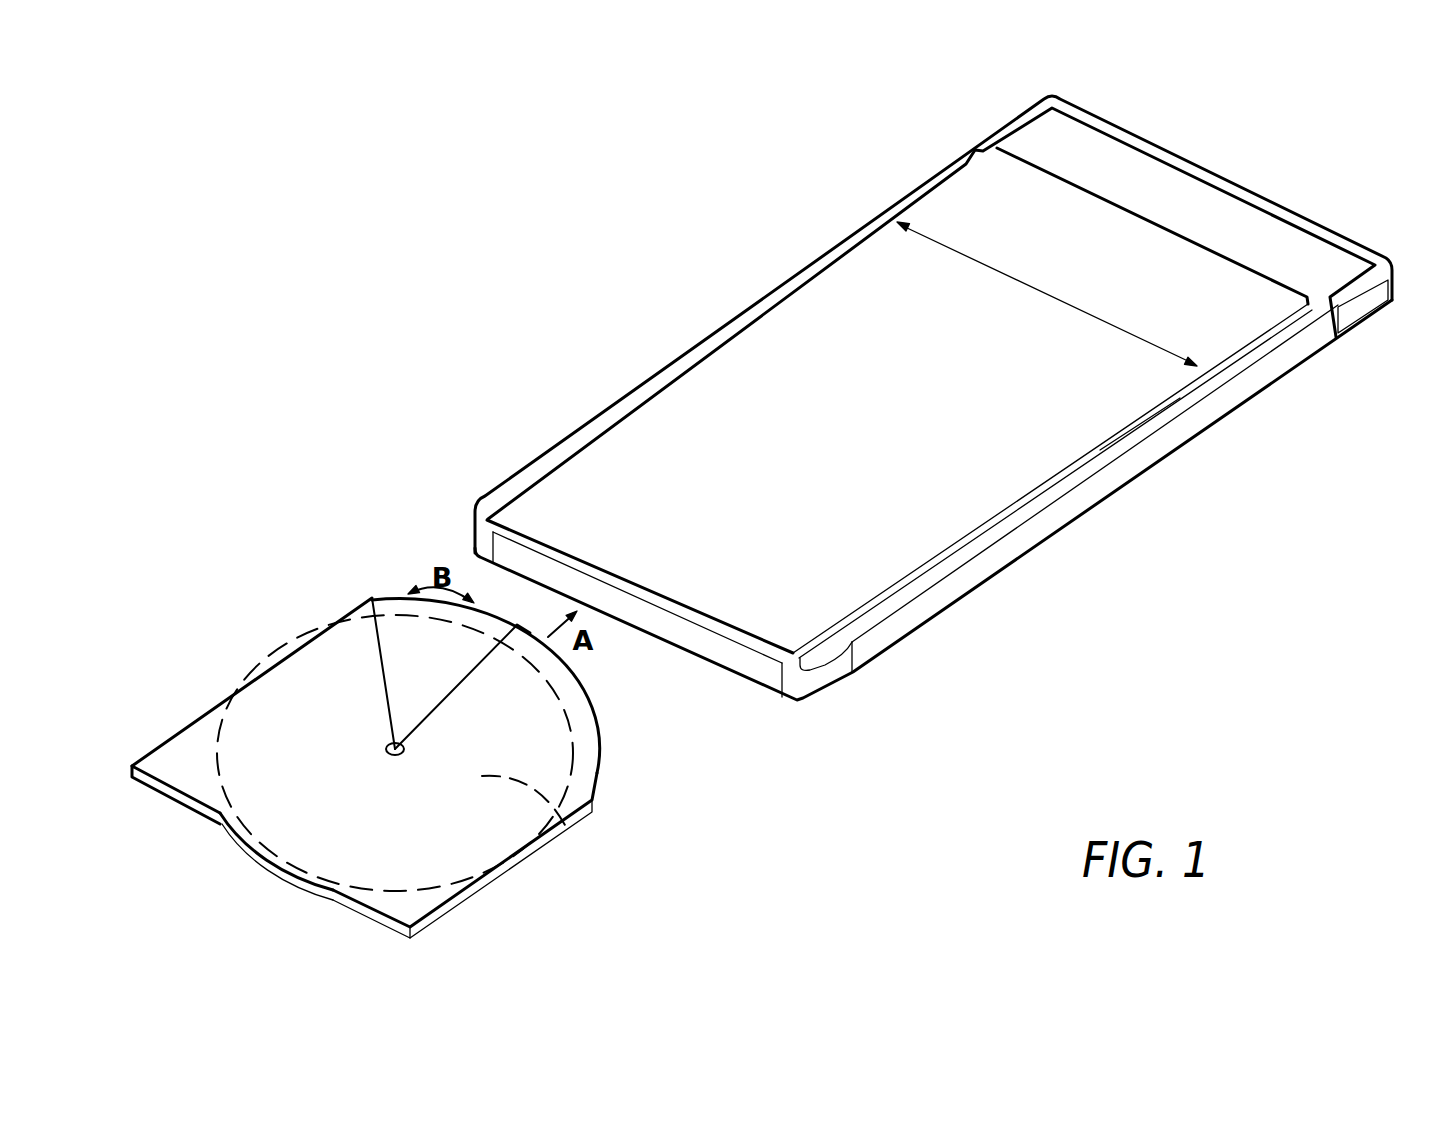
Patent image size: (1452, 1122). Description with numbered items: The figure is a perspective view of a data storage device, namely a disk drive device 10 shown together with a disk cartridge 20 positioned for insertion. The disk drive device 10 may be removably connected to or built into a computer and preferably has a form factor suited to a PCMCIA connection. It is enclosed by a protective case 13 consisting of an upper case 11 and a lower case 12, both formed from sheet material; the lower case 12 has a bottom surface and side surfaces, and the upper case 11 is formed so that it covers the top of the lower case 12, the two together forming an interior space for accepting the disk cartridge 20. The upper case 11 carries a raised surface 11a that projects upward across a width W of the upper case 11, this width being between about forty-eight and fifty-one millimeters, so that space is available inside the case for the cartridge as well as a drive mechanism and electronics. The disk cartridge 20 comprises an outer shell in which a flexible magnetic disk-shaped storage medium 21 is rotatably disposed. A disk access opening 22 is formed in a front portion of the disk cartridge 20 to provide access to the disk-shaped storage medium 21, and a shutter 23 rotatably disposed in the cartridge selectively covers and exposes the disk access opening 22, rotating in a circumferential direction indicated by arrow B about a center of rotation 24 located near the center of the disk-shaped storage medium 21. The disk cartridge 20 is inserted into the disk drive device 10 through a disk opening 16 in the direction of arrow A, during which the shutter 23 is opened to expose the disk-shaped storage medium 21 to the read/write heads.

The disk drive device 10 is at (808, 429).
The upper case 11 is at (1202, 315).
The raised surface 11a is at (1068, 420).
The lower case 12 is at (1297, 350).
The protective case 13 is at (1390, 357).
The disk opening 16 is at (713, 642).
The disk cartridge 20 is at (172, 776).
The disk-shaped storage medium 21 is at (548, 797).
The disk access opening 22 is at (386, 656).
The shutter 23 is at (388, 603).
The center of rotation 24 is at (402, 757).